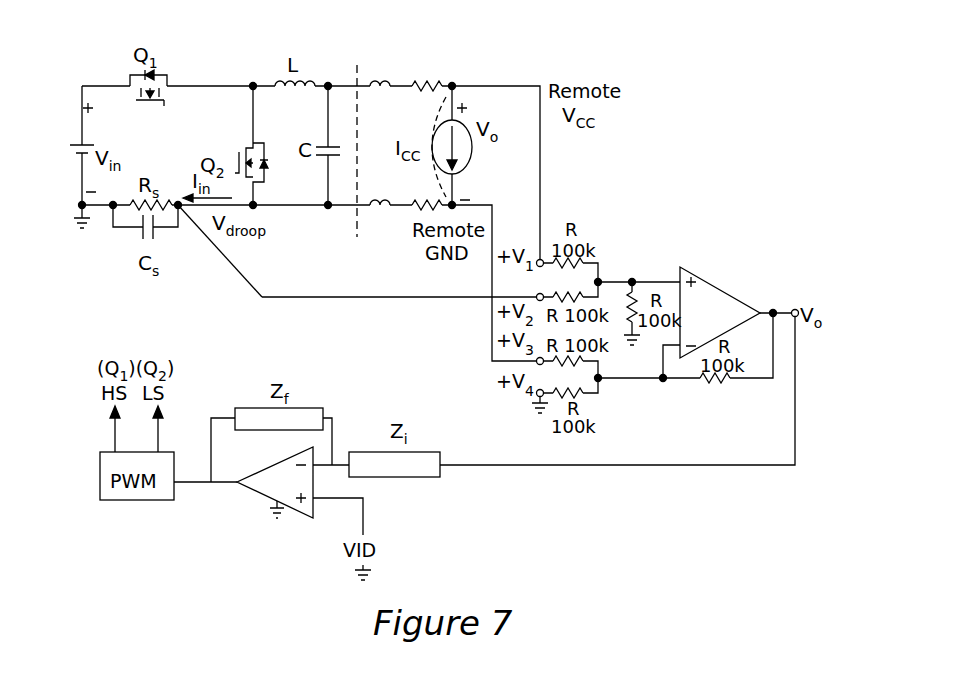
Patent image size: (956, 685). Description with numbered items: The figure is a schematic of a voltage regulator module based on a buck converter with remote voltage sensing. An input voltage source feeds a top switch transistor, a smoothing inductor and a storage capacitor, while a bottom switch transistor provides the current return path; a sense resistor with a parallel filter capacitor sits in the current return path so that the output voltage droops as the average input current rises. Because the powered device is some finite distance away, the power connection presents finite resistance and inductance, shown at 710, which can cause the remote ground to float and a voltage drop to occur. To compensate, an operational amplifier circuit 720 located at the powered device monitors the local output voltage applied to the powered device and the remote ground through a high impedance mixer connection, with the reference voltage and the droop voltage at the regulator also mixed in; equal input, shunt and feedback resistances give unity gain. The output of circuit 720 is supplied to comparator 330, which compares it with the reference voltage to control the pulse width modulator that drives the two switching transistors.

The connection resistance and inductance 710 is at (450, 78).
The remote sensing circuit 720 is at (740, 301).
The comparator 330 is at (263, 494).